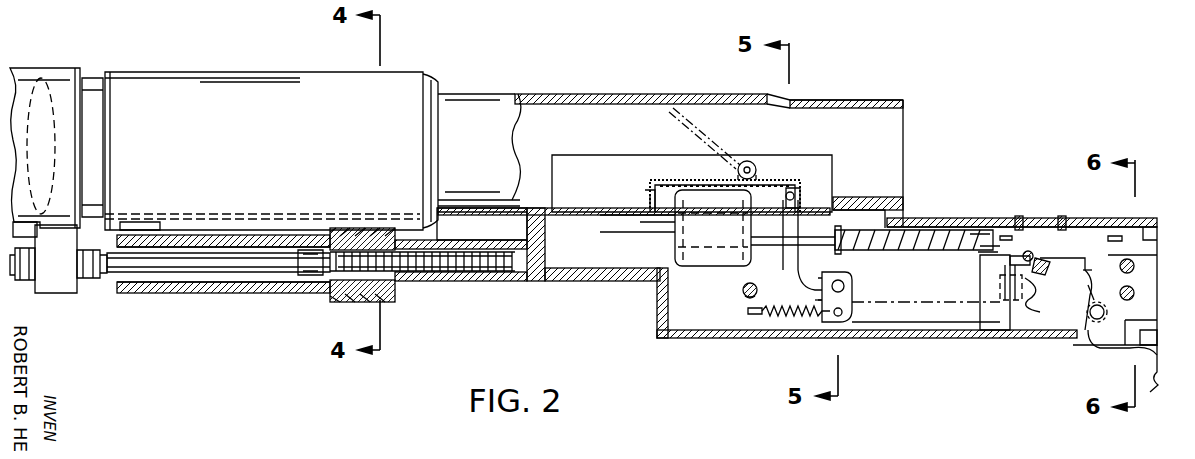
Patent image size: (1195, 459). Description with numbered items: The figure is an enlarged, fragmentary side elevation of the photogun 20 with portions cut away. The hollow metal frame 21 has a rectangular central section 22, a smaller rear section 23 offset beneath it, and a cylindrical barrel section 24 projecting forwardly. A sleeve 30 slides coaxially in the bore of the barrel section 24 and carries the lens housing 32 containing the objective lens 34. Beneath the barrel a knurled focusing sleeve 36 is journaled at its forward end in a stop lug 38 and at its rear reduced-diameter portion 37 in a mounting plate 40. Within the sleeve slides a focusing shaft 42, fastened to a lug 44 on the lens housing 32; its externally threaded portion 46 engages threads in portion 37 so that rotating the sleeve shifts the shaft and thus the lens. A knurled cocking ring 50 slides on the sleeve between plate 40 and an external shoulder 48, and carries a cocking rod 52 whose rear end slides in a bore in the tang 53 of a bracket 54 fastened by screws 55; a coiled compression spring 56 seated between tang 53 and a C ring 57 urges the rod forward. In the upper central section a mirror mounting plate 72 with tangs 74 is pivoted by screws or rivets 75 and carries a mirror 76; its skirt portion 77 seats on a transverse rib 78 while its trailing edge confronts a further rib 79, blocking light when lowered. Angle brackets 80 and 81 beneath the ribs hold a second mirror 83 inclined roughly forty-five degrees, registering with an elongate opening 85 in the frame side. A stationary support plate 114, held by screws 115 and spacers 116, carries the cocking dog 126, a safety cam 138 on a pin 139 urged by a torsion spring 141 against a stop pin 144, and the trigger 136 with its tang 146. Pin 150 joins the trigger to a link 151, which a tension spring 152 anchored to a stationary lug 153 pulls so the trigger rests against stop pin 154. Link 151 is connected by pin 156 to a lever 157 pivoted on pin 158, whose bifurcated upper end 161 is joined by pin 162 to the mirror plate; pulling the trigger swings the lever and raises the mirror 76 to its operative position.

The photogun 20 is at (508, 76).
The frame 21 is at (512, 93).
The central section 22 is at (585, 95).
The rear section 23 is at (950, 218).
The barrel section 24 is at (232, 78).
The sleeve 30 is at (95, 80).
The lens housing 32 is at (57, 66).
The objective lens 34 is at (33, 88).
The focusing sleeve 36 is at (214, 288).
The reduced-diameter portion 37 is at (485, 284).
The stop lug 38 is at (137, 222).
The mounting plate 40 is at (528, 283).
The focusing shaft 42 is at (190, 268).
The lug 44 is at (64, 282).
The externally threaded portion 46 is at (445, 274).
The external shoulder 48 is at (335, 292).
The cocking ring 50 is at (382, 298).
The cocking rod 52 is at (462, 240).
The tang 53 is at (972, 242).
The bracket 54 is at (1015, 220).
The screws 55 is at (1062, 220).
The coiled compression spring 56 is at (906, 250).
The C ring 57 is at (842, 228).
The mirror mounting plate 72 is at (655, 178).
The tangs 74 is at (763, 172).
The screws or rivets 75 is at (748, 160).
The mirror 76 is at (672, 120).
The skirt portion 77 is at (640, 190).
The transverse rib 78 is at (652, 198).
The rib 79 is at (808, 190).
The angle bracket 80 is at (640, 225).
The angle bracket 81 is at (763, 247).
The second mirror 83 is at (713, 228).
The elongate opening 85 is at (572, 282).
The support plate 114 is at (995, 320).
The screws 115 is at (746, 287).
The spacers 116 is at (741, 297).
The cocking dog 126 is at (1008, 230).
The trigger 136 is at (1158, 380).
The safety cam 138 is at (1025, 302).
The pin 139 is at (1032, 265).
The torsion spring 141 is at (1040, 274).
The stop pin 144 is at (1000, 283).
The tang 146 is at (1091, 270).
The pin 150 is at (1097, 322).
The link 151 is at (905, 322).
The tension spring 152 is at (795, 318).
The stationary lug 153 is at (748, 316).
The stop pin 154 is at (1088, 298).
The pin 156 is at (843, 322).
The lever 157 is at (846, 272).
The pin 158 is at (852, 288).
The bifurcated upper end 161 is at (810, 196).
The pin 162 is at (793, 185).